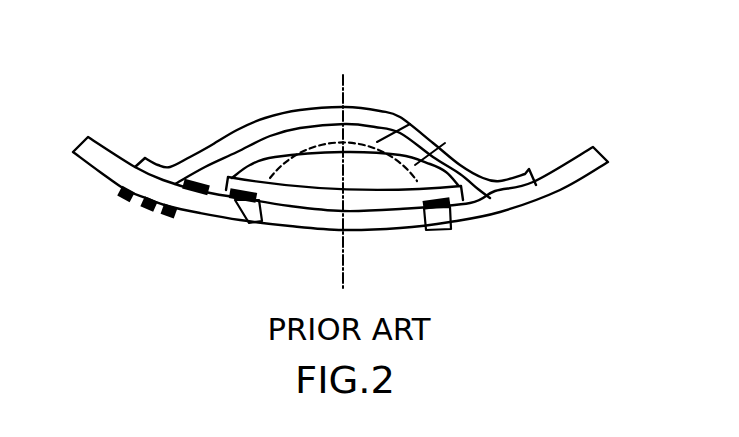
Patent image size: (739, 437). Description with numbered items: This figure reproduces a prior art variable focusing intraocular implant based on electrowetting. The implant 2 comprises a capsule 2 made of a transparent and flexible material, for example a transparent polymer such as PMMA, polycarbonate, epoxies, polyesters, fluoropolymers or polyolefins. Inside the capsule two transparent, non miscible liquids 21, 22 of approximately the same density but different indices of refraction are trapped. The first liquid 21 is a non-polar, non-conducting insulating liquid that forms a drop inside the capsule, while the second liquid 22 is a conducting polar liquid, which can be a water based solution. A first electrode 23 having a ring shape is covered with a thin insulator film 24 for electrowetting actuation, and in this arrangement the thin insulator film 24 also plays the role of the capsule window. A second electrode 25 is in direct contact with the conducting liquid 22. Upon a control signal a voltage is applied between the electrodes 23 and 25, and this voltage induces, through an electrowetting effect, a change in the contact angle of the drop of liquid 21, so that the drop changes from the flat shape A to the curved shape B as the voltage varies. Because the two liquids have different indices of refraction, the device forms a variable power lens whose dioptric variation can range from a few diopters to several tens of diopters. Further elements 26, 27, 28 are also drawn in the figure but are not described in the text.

The implant 2 is at (518, 105).
The first liquid 21 is at (315, 172).
The second liquid 22 is at (250, 157).
The first electrode 23 is at (450, 230).
The thin insulator film 24 is at (358, 203).
The second electrode 25 is at (200, 211).
The printed circuit board 26 is at (584, 167).
The component 27 is at (170, 215).
The component 28 is at (124, 200).
The flat drop shape A is at (445, 143).
The curved drop shape B is at (410, 124).